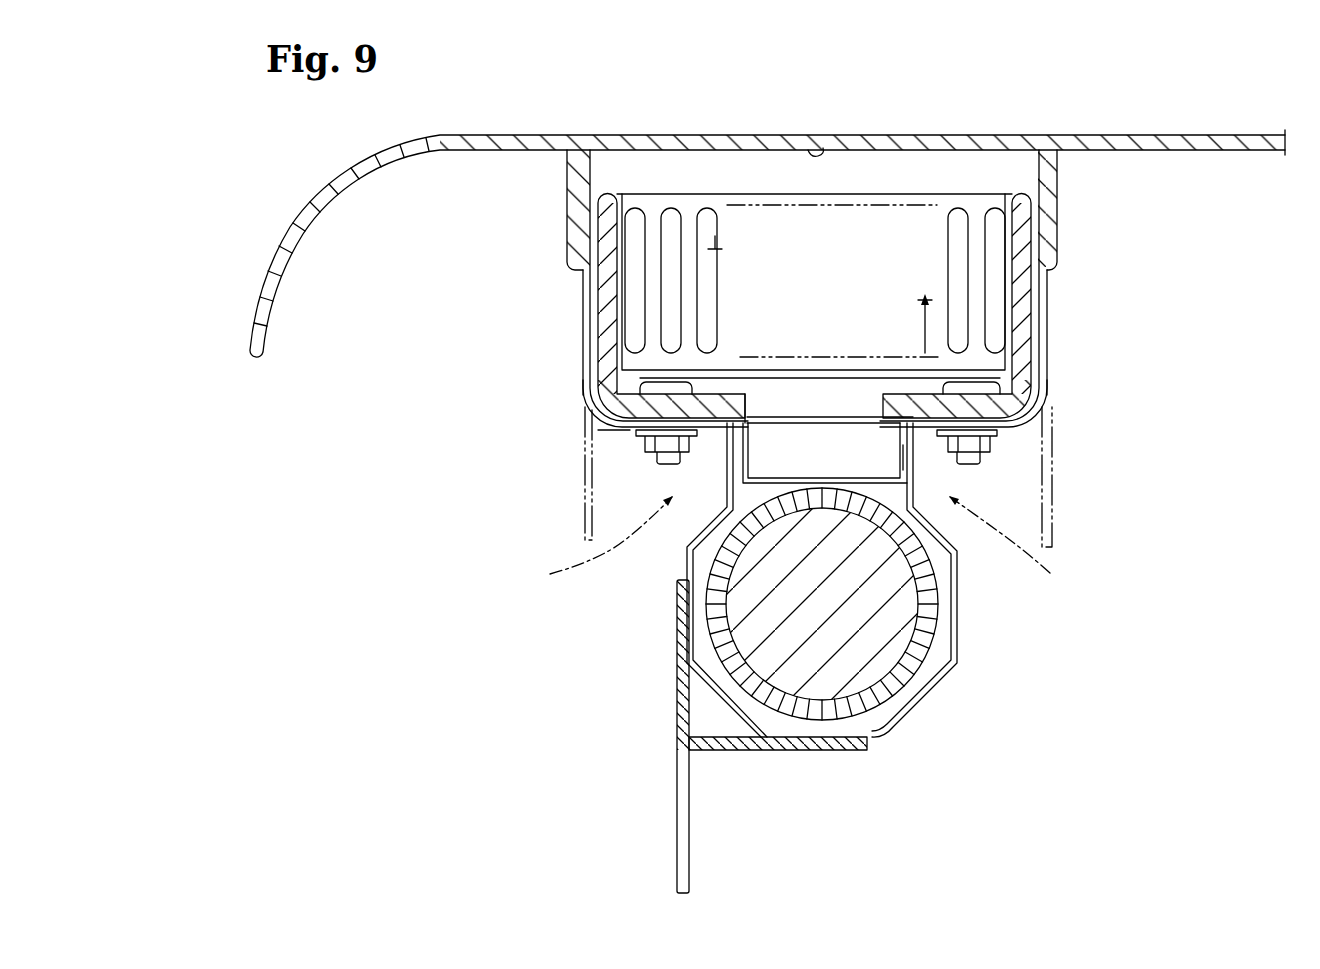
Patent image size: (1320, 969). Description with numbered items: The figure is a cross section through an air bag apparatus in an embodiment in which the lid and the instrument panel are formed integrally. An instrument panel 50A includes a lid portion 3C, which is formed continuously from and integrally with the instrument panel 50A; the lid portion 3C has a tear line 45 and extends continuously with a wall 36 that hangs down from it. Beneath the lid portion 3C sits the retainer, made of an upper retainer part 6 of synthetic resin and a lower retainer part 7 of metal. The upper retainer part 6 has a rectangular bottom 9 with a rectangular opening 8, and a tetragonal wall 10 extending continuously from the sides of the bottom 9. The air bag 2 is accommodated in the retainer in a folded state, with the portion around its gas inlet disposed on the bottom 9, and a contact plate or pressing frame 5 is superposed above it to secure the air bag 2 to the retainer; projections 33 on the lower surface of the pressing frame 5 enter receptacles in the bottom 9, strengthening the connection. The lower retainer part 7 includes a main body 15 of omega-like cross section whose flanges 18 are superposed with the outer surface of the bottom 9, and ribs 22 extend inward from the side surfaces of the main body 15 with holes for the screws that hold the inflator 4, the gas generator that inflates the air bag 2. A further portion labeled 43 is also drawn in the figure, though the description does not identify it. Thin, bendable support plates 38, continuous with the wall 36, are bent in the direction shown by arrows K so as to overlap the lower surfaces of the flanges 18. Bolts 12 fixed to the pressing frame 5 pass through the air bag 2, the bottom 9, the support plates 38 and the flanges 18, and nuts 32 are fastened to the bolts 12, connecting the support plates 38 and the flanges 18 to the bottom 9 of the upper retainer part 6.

The air bag 2 is at (712, 205).
The lid portion 3C is at (816, 124).
The inflator 4 is at (917, 683).
The contact plate 5 is at (740, 394).
The upper retainer part 6 is at (606, 199).
The lower retainer part 7 is at (670, 568).
The rectangular opening 8 is at (748, 423).
The bottom 9 is at (613, 430).
The tetragonal wall 10 is at (583, 330).
The bolts 12 is at (663, 465).
The main body 15 is at (956, 577).
The flanges 18 is at (918, 463).
The ribs 22 is at (690, 645).
The nuts 32 is at (640, 443).
The projections 33 is at (672, 393).
The first wall 36 is at (567, 258).
The support plates 38 is at (583, 385).
The channel portion 43 is at (748, 440).
The tear line 45 is at (822, 152).
The instrument panel 50A is at (1112, 128).
The arrows K is at (803, 553).